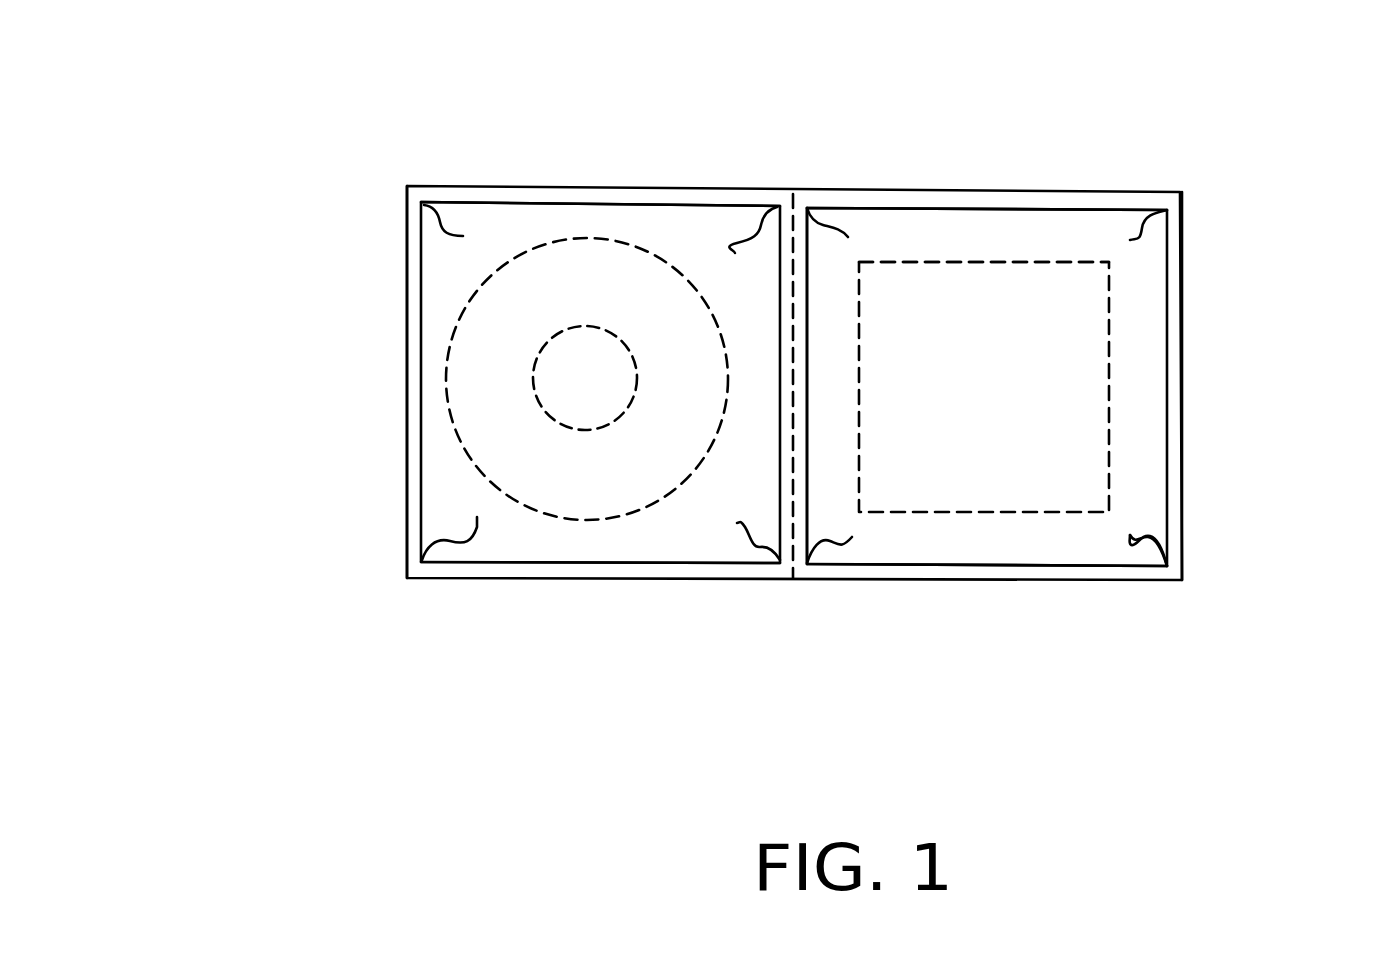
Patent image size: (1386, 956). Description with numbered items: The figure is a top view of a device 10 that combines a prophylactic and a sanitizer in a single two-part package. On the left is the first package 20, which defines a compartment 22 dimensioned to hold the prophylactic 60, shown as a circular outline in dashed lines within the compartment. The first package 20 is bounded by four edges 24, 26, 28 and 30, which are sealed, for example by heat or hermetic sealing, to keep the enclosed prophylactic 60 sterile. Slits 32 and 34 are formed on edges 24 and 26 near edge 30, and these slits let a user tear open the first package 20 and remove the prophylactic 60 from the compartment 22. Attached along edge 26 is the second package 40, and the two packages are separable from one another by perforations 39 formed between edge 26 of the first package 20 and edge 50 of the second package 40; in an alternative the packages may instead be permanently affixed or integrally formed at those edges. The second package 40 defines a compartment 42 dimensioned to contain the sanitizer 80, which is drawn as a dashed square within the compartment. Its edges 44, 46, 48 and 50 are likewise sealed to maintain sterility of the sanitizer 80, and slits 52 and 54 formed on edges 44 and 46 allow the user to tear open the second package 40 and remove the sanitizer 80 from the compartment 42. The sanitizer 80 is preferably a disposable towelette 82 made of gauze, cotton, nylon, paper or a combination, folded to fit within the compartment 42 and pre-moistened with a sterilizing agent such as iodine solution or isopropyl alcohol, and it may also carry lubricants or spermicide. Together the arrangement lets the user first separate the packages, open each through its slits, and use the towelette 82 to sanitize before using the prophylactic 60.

The device 10 is at (350, 134).
The first package 20 is at (592, 545).
The compartment 22 is at (436, 278).
The edge 24 is at (552, 191).
The edge 26 is at (783, 280).
The edge 28 is at (697, 577).
The edge 30 is at (412, 370).
The slit 32 is at (433, 198).
The slit 34 is at (432, 577).
The perforations 39 is at (790, 566).
The second package 40 is at (1033, 228).
The compartment 42 is at (940, 549).
The edge 44 is at (965, 200).
The edge 46 is at (1178, 450).
The edge 48 is at (1072, 580).
The edge 50 is at (803, 258).
The slit 52 is at (1140, 200).
The slit 54 is at (1132, 578).
The prophylactic 60 is at (622, 277).
The sanitizer 80 is at (1080, 400).
The towelette 82 is at (1073, 303).